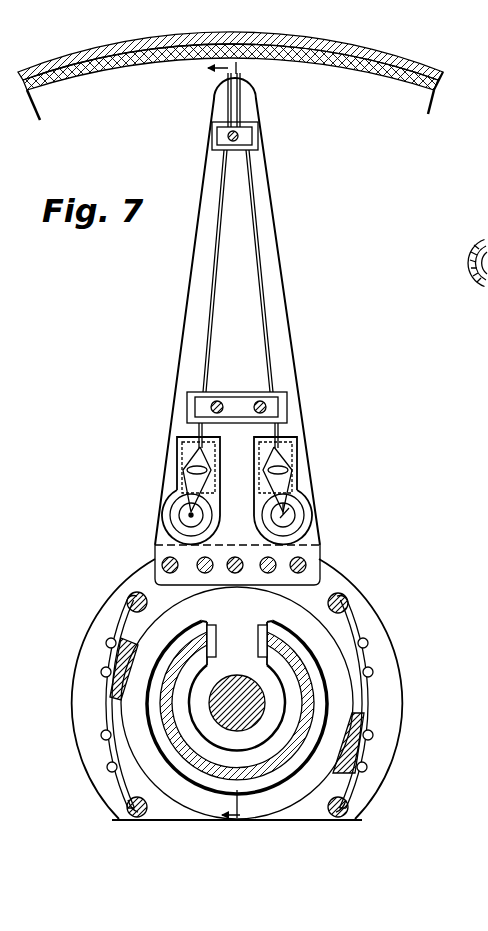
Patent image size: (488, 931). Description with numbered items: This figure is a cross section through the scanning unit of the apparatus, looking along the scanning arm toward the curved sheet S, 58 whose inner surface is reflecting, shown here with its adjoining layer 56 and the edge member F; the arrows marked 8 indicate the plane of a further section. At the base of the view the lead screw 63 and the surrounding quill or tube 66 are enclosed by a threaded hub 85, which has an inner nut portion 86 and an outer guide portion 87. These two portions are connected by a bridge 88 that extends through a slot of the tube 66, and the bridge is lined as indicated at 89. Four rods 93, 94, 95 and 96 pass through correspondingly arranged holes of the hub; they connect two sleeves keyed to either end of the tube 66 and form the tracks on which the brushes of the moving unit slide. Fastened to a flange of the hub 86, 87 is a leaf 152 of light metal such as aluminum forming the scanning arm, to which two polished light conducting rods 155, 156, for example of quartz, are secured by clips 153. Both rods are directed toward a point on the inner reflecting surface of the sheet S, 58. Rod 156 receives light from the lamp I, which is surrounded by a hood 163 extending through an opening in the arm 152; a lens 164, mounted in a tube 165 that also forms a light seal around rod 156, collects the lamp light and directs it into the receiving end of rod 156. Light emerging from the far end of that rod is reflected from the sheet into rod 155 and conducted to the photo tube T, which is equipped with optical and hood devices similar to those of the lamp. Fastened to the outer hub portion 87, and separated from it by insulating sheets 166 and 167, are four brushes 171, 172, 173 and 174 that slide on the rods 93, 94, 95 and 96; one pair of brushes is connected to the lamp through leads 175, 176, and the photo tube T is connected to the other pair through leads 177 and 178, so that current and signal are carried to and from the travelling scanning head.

The section line 8- 8 is at (222, 444).
The rim band 56 is at (412, 82).
The sheet or cover 58 is at (446, 53).
The shoe S is at (230, 105).
The felly F is at (444, 79).
The lead screw 63 is at (244, 677).
The tube 66 is at (195, 770).
The threaded hub 85 is at (112, 603).
The inner nut portion 86 is at (255, 752).
The outer guide portion 87 is at (140, 745).
The bridge 88 is at (237, 641).
The lining 89 is at (258, 622).
The rod 93 is at (131, 597).
The rod 94 is at (347, 597).
The rod 95 is at (362, 817).
The rod 96 is at (128, 806).
The leaf 152 is at (285, 312).
The clips 153 is at (247, 138).
The light conducting rod 155 is at (213, 252).
The light conducting rod 156 is at (265, 262).
The hood 163 is at (303, 521).
The lens 164 is at (273, 452).
The tube 165 is at (270, 466).
The insulating sheet 166 is at (110, 706).
The insulating sheet 167 is at (362, 700).
The brush 171 is at (120, 617).
The brush 172 is at (352, 614).
The brush 173 is at (352, 793).
The brush 174 is at (125, 800).
The lead 175 is at (362, 656).
The lead 176 is at (372, 720).
The lead 177 is at (110, 732).
The lead 178 is at (119, 648).
The photo tube T is at (178, 513).
The bearing pin I is at (300, 516).